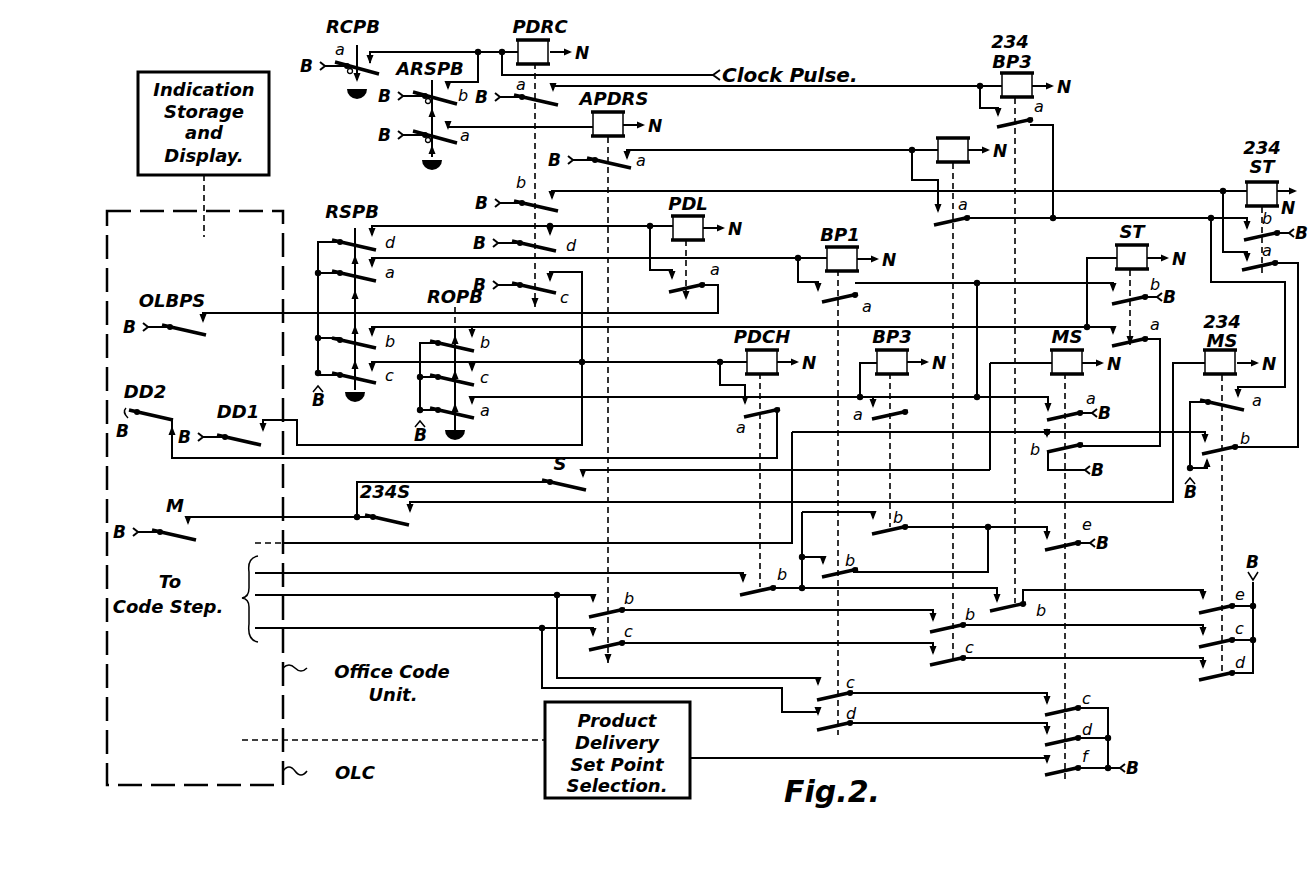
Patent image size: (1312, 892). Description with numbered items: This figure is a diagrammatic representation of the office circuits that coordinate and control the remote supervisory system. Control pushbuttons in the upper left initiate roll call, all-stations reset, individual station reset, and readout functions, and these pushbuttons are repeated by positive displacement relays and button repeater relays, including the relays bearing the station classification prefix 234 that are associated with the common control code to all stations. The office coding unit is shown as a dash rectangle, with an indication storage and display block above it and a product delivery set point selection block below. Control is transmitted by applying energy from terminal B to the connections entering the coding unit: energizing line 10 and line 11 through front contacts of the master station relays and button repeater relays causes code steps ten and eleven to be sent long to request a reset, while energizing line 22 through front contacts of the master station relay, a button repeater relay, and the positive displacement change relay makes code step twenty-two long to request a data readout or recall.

The code step line 22 is at (501, 568).
The code step line 10 is at (538, 631).
The code step line 11 is at (538, 661).
The station classification prefix 234 is at (970, 130).